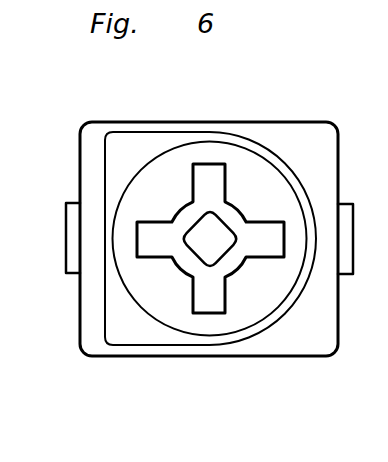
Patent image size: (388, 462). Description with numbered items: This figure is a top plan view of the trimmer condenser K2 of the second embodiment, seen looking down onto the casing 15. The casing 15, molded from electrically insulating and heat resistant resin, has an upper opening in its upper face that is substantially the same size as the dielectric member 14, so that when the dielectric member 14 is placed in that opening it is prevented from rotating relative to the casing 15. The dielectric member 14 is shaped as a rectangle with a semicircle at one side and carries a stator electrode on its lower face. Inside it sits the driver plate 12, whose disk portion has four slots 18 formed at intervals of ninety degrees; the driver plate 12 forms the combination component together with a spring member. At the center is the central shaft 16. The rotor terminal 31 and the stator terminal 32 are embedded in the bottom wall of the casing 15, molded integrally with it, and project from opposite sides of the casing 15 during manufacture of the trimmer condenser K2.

The driver plate 12 is at (142, 166).
The dielectric member 14 is at (128, 332).
The casing 15 is at (312, 337).
The central shaft 16 is at (216, 228).
The slots 18 is at (144, 240).
The rotor terminal 31 is at (348, 223).
The stator terminal 32 is at (70, 254).
The trimmer condenser K2 is at (211, 259).